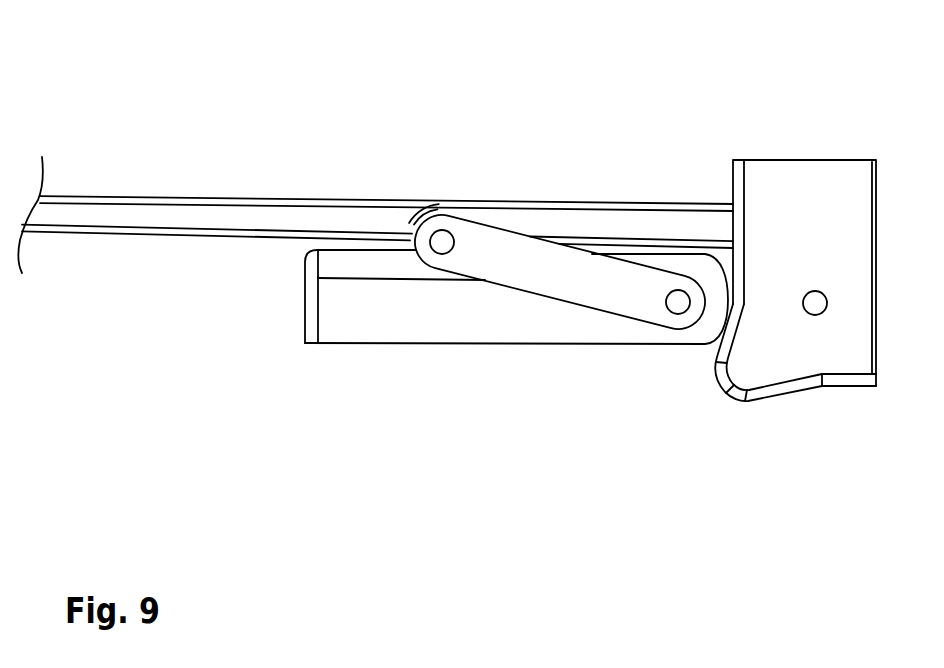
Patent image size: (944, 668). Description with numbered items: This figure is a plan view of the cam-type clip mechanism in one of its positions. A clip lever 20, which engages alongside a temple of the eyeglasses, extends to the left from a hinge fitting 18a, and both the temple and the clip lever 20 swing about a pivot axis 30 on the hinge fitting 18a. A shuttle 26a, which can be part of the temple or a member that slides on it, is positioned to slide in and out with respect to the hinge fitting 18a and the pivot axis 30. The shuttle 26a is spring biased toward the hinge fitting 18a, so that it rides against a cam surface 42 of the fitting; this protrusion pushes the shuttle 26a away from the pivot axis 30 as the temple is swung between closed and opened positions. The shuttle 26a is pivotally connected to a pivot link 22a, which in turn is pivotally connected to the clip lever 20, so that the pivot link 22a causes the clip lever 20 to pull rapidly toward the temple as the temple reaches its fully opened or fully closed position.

The clip lever 20 is at (163, 198).
The hinge fitting 18a is at (795, 175).
The pivot link 22a is at (560, 278).
The shuttle 26a is at (368, 325).
The cam surface 42 is at (718, 378).
The pivot axis 30 is at (822, 313).